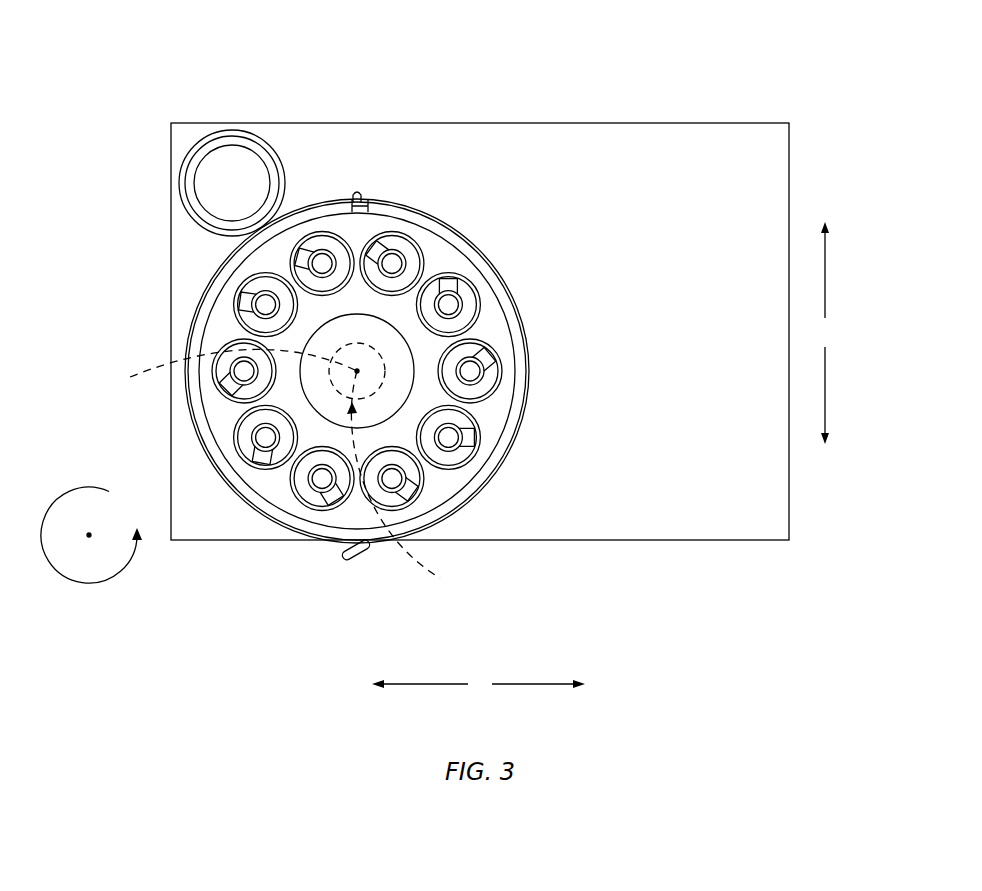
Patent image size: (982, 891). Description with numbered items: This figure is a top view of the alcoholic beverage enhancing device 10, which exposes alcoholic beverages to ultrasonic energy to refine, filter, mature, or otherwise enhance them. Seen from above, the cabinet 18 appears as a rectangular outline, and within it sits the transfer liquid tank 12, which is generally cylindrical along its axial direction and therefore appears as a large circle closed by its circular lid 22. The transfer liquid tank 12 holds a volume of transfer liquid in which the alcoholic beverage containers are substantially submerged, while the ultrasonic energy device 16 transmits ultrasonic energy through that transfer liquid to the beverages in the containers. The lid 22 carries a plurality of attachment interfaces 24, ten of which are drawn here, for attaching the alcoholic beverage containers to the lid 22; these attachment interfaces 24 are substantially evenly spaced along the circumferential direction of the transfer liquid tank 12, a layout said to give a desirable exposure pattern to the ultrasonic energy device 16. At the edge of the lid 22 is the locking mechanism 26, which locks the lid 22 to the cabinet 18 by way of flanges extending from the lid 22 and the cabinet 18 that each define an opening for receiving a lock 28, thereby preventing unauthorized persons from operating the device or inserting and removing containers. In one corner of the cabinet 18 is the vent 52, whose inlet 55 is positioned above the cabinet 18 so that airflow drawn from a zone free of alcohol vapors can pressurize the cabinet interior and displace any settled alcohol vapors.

The alcoholic beverage enhancing device 10 is at (609, 60).
The transfer liquid tank 12 is at (379, 213).
The ultrasonic energy device 16 is at (440, 578).
The cabinet 18 is at (762, 188).
The lid 22 is at (441, 245).
The attachment interfaces 24 is at (320, 232).
The locking mechanism 26 is at (323, 595).
The lock 28 is at (345, 560).
The vent 52 is at (253, 145).
The inlet 55 is at (210, 182).